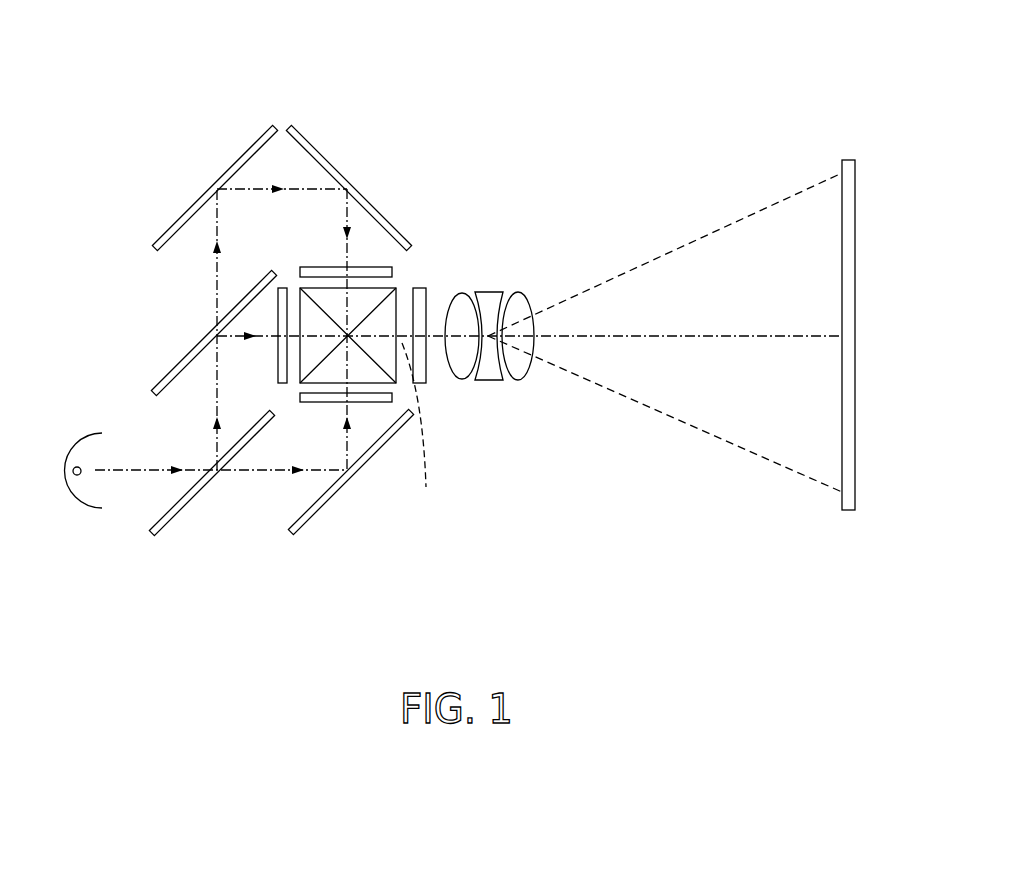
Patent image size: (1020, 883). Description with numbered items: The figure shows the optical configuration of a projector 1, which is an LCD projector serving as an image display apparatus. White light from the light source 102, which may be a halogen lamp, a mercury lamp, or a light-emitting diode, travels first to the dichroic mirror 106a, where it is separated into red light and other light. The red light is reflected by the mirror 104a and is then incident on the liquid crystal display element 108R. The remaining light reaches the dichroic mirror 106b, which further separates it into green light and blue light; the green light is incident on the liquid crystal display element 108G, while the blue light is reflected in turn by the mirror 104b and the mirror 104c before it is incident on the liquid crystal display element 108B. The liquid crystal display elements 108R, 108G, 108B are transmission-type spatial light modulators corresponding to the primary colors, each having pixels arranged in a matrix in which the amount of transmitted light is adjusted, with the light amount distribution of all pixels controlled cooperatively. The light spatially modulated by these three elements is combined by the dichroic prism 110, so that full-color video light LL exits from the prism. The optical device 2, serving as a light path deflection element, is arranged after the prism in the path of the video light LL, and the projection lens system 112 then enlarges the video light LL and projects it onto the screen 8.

The projector 1 is at (458, 304).
The optical device 2 is at (430, 370).
The screen 8 is at (845, 512).
The light source 102 is at (82, 503).
The mirror 104a is at (320, 513).
The mirror 104b is at (242, 158).
The mirror 104c is at (330, 152).
The dichroic mirror 106a is at (183, 512).
The dichroic mirror 106b is at (173, 370).
The liquid crystal display element 108B is at (395, 270).
The liquid crystal display element 108G is at (277, 348).
The liquid crystal display element 108R is at (325, 403).
The dichroic prism 110 is at (395, 289).
The projection lens system 112 is at (532, 387).
The video light LL is at (418, 427).